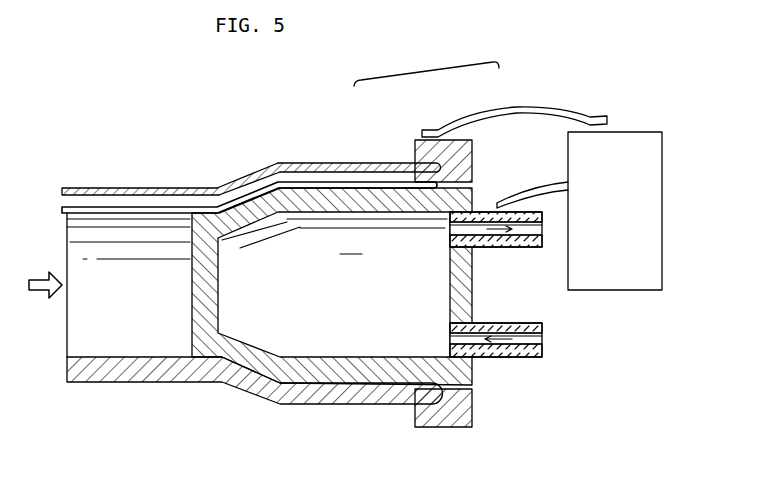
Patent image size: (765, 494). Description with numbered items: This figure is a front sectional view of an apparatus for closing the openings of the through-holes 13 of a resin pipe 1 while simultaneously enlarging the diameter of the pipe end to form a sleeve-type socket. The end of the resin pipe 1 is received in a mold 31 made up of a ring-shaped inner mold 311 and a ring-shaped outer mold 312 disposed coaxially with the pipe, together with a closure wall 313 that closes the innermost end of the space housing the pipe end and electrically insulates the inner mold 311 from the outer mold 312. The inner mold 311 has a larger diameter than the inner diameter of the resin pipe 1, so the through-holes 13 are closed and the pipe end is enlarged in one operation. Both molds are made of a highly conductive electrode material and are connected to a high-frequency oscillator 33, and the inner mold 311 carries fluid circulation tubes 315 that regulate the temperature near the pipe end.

The resin pipe 1 is at (166, 187).
The through-holes 13 is at (318, 163).
The mold 31 is at (441, 61).
The inner mold 311 is at (381, 163).
The outer mold 312 is at (416, 150).
The closure wall 313 is at (468, 112).
The fluid circulation tubes 315 is at (530, 250).
The high-frequency oscillator 33 is at (625, 147).